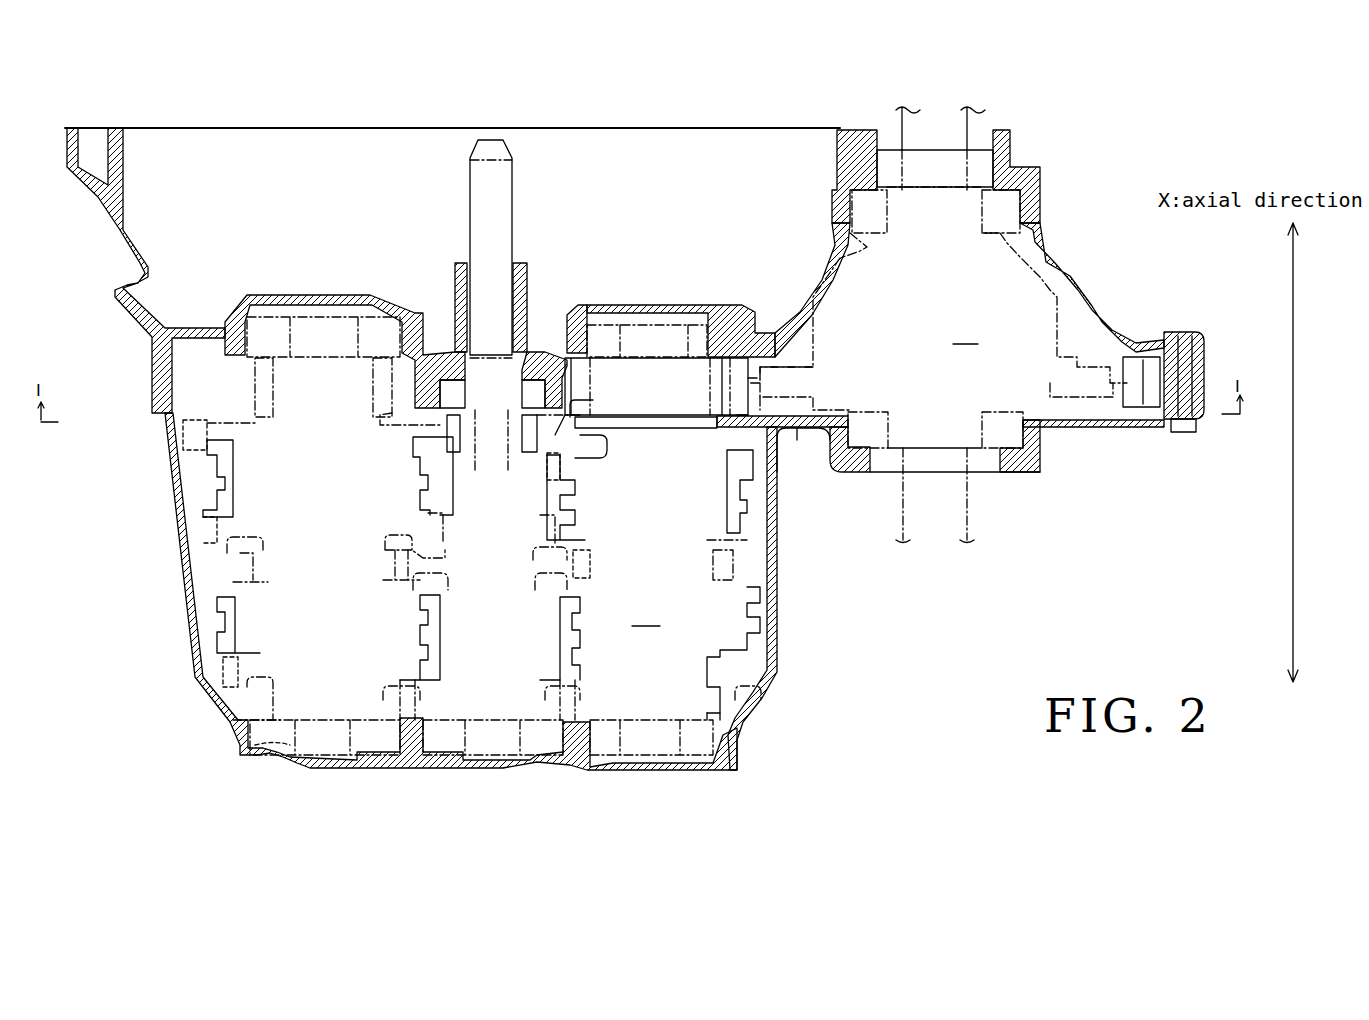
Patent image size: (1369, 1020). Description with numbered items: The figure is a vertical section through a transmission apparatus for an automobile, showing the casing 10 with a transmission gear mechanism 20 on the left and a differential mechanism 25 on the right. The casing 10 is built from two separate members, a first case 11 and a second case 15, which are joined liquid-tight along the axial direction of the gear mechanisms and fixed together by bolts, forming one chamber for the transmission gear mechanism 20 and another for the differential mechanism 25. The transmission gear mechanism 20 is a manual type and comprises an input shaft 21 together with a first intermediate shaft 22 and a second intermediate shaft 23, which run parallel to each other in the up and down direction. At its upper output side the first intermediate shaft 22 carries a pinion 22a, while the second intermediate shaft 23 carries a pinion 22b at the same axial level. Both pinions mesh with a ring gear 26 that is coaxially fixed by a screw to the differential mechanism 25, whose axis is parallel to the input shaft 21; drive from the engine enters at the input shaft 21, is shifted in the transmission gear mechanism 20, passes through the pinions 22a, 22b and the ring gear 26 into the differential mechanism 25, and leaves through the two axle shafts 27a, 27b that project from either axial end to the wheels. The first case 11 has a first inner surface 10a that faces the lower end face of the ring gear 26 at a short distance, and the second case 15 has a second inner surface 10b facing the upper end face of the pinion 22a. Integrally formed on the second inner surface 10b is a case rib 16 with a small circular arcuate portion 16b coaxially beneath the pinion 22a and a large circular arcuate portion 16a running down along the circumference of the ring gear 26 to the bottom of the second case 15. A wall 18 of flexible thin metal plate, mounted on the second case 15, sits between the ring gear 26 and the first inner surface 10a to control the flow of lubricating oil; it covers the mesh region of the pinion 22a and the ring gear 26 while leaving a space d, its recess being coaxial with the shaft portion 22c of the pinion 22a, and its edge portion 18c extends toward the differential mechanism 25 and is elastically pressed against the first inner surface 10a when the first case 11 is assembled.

The casing 10 is at (850, 676).
The first inner surface 10a is at (827, 410).
The second inner surface 10b is at (547, 350).
The first case 11 is at (777, 633).
The second case 15 is at (1057, 270).
The case rib 16 is at (627, 418).
The large circular arcuate portion 16a is at (800, 428).
The small circular arcuate portion 16b is at (535, 421).
The wall 18 is at (667, 418).
The edge portion 18c is at (783, 413).
The transmission gear mechanism 20 is at (755, 563).
The input shaft 21 is at (517, 207).
The first intermediate shaft 22 is at (735, 746).
The pinion 22a is at (703, 327).
The pinion 22b is at (256, 378).
The shaft portion 22c is at (582, 458).
The second intermediate shaft 23 is at (240, 745).
The differential mechanism 25 is at (830, 267).
The ring gear 26 is at (1124, 357).
The axle shaft 27a is at (970, 523).
The axle shaft 27b is at (968, 115).
The space d is at (750, 415).